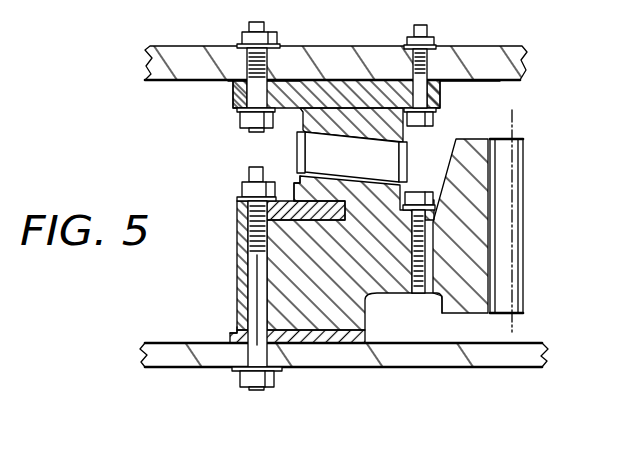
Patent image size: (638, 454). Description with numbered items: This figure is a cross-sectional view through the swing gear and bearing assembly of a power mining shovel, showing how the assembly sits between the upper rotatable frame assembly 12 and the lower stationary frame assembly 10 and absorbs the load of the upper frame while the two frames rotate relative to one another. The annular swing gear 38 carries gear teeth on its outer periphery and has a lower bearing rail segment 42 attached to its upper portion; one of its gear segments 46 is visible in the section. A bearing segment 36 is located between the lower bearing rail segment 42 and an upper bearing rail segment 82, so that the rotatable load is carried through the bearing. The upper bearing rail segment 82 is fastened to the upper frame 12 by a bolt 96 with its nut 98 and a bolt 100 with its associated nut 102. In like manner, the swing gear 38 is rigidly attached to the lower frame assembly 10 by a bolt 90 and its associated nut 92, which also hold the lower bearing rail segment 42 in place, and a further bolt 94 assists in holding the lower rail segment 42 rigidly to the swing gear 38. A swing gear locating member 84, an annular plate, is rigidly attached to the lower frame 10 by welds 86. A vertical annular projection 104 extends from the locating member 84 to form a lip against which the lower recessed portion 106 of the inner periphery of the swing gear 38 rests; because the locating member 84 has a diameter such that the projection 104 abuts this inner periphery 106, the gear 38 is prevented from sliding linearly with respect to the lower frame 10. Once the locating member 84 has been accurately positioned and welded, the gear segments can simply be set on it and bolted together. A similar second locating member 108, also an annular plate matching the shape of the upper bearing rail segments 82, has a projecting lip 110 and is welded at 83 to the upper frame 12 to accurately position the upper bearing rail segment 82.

The lower frame assembly 10 is at (504, 360).
The upper frame assembly 12 is at (508, 66).
The bearing segment 36 is at (392, 160).
The swing gear 38 is at (528, 172).
The lower bearing rail segment 42 is at (296, 182).
The gear segment 46 is at (525, 220).
The upper bearing rail segment 82 is at (440, 100).
The weld 83 is at (230, 82).
The swing gear locating member 84 is at (318, 345).
The welds 86 is at (228, 342).
The bolt 90 is at (253, 388).
The nut 92 is at (243, 192).
The bolt 94 is at (436, 192).
The bolt 96 is at (421, 72).
The nut 98 is at (408, 40).
The bolt 100 is at (258, 132).
The nut 102 is at (240, 36).
The vertical annular projection 104 is at (230, 328).
The lower recessed portion of the inner periphery 106 is at (237, 320).
The second locating member 108 is at (326, 80).
The projecting lip 110 is at (232, 100).